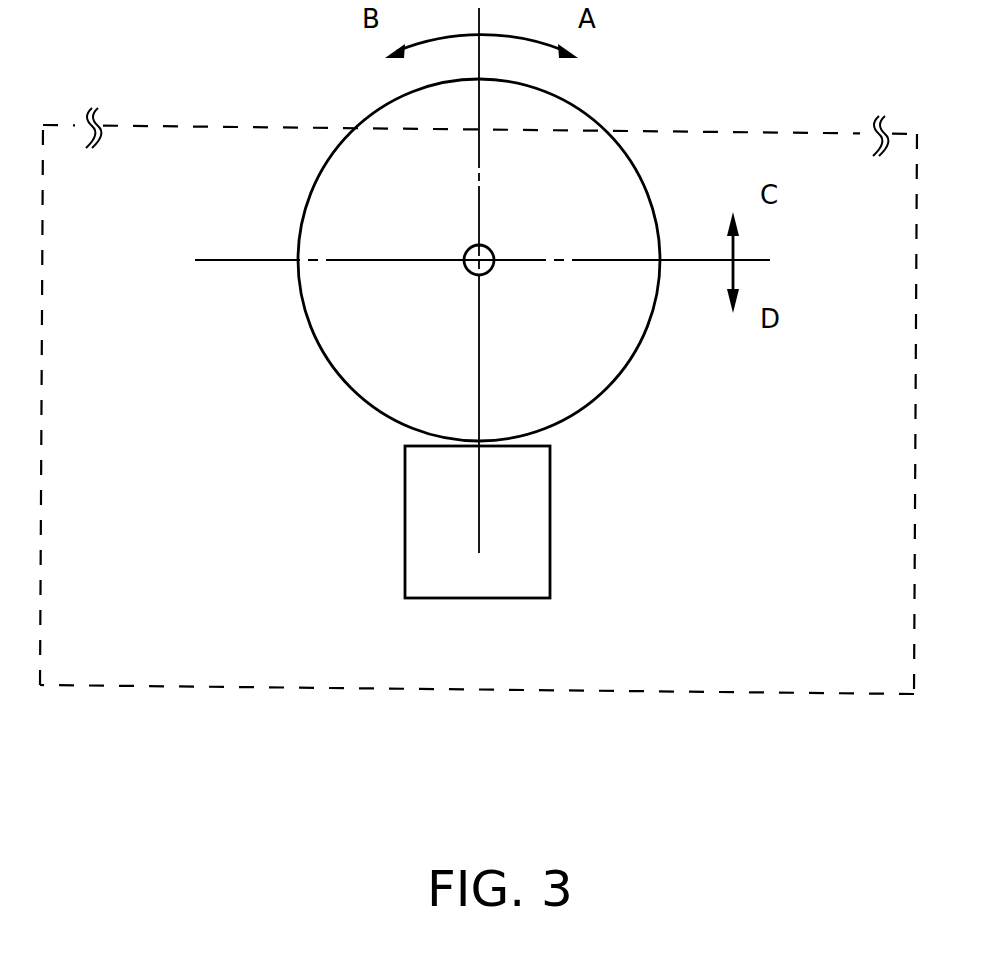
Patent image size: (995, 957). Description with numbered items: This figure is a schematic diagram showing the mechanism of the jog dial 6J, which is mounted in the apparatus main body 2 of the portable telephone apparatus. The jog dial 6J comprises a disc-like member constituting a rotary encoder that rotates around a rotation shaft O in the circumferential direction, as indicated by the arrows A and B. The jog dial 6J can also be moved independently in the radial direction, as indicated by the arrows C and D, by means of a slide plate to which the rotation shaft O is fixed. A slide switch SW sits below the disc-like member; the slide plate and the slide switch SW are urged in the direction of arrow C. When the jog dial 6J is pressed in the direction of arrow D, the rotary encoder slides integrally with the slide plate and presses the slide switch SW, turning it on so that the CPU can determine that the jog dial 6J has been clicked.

The apparatus main body 2 is at (150, 126).
The jog dial 6J is at (628, 112).
The rotation shaft O is at (492, 248).
The slide switch SW is at (551, 553).